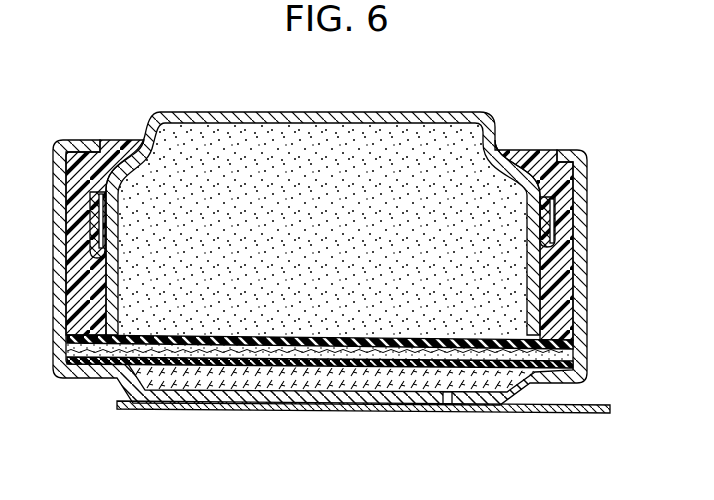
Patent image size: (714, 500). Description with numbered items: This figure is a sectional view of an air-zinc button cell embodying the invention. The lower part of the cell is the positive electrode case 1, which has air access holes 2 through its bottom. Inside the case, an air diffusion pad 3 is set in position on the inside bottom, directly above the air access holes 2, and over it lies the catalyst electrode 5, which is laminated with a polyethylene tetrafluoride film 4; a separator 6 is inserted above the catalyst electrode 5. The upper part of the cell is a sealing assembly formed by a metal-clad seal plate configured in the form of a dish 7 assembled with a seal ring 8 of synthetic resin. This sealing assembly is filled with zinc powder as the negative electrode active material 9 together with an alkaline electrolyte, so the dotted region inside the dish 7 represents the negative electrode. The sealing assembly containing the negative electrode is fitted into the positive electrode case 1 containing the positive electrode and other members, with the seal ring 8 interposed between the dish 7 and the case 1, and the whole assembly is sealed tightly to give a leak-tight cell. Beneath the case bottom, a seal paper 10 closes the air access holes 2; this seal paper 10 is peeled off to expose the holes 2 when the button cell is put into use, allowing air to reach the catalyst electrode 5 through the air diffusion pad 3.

The positive electrode case 1 is at (585, 250).
The air access holes 2 is at (450, 407).
The air diffusion pad 3 is at (363, 384).
The polyethylene tetrafluoride film 4 is at (505, 378).
The catalyst electrode 5 is at (567, 365).
The separator 6 is at (552, 348).
The dish 7 is at (461, 117).
The seal ring 8 is at (563, 186).
The negative electrode active material 9 is at (351, 148).
The seal paper 10 is at (285, 410).